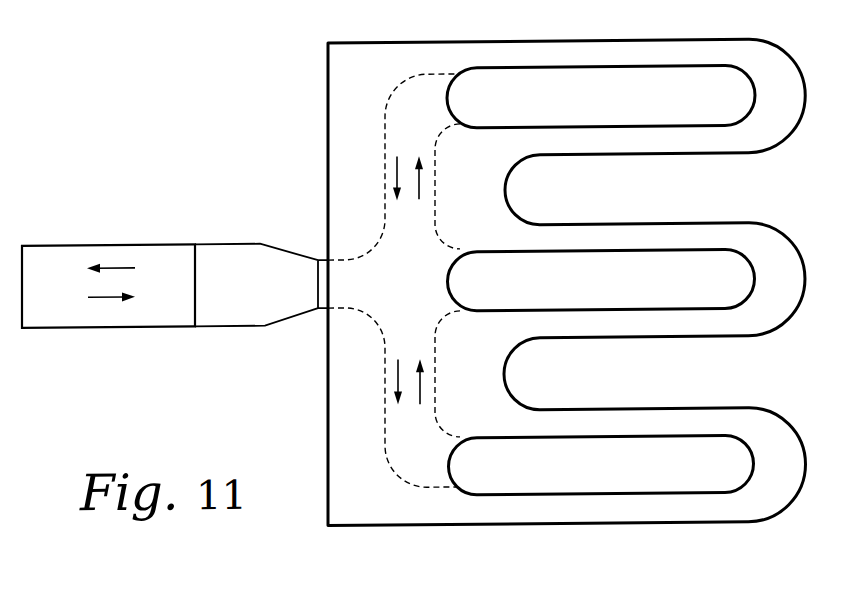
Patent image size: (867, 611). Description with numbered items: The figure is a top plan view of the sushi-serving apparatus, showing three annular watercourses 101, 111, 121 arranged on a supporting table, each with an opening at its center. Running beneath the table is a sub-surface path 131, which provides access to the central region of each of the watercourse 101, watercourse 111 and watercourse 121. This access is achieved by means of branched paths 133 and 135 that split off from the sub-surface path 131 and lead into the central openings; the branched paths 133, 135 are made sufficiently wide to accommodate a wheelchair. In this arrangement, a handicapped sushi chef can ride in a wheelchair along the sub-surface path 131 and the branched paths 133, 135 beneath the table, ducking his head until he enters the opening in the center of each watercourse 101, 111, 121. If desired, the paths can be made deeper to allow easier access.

The watercourse 101 is at (682, 84).
The watercourse 111 is at (683, 267).
The watercourse 121 is at (683, 448).
The sub-surface path 131 is at (221, 259).
The branched path 133 is at (427, 391).
The branched path 135 is at (427, 187).